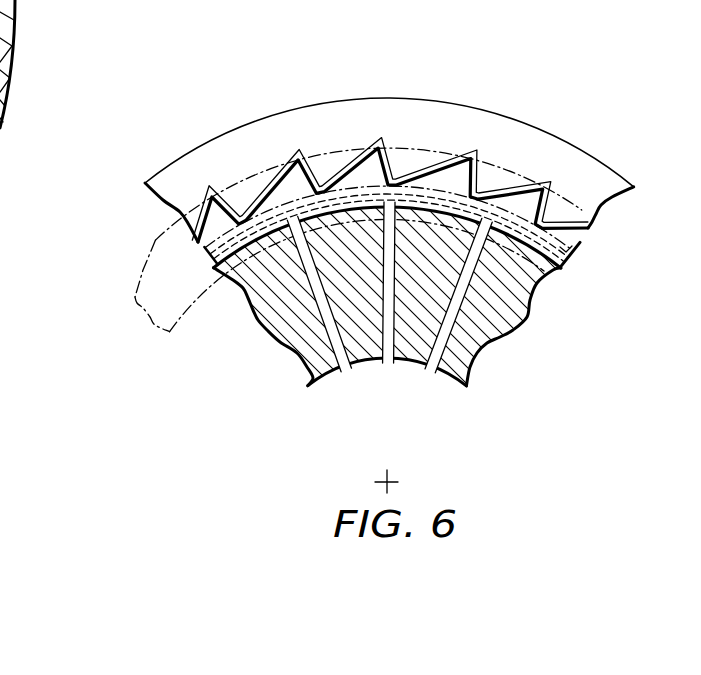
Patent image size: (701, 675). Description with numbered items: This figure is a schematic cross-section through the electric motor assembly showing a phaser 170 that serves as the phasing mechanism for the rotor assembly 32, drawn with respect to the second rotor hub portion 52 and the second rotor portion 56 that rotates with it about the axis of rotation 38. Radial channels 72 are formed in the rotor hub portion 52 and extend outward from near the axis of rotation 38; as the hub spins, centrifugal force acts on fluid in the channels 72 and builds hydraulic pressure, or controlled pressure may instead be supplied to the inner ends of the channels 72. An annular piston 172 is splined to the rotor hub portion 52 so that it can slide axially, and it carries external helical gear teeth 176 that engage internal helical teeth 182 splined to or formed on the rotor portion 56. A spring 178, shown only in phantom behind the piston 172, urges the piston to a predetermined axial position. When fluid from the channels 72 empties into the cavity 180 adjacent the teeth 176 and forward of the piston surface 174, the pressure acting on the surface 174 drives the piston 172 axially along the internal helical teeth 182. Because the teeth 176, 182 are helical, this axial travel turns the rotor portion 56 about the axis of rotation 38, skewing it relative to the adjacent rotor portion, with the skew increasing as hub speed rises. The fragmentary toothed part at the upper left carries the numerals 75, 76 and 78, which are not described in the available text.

The rotor assembly 32 is at (150, 215).
The axis of rotation 38 is at (393, 470).
The second rotor hub portion 52 is at (522, 325).
The second rotor portion 56 is at (238, 155).
The radial channel 72 is at (328, 305).
The tooth 75 is at (12, 80).
The tooth flank 76 is at (16, 18).
The tooth root 78 is at (16, 50).
The phaser 170 is at (618, 230).
The annular piston 172 is at (582, 252).
The surface 174 is at (451, 176).
The external helical gear teeth 176 is at (530, 202).
The spring 178 is at (582, 242).
The cavity 180 is at (147, 262).
The internal helical teeth 182 is at (327, 163).